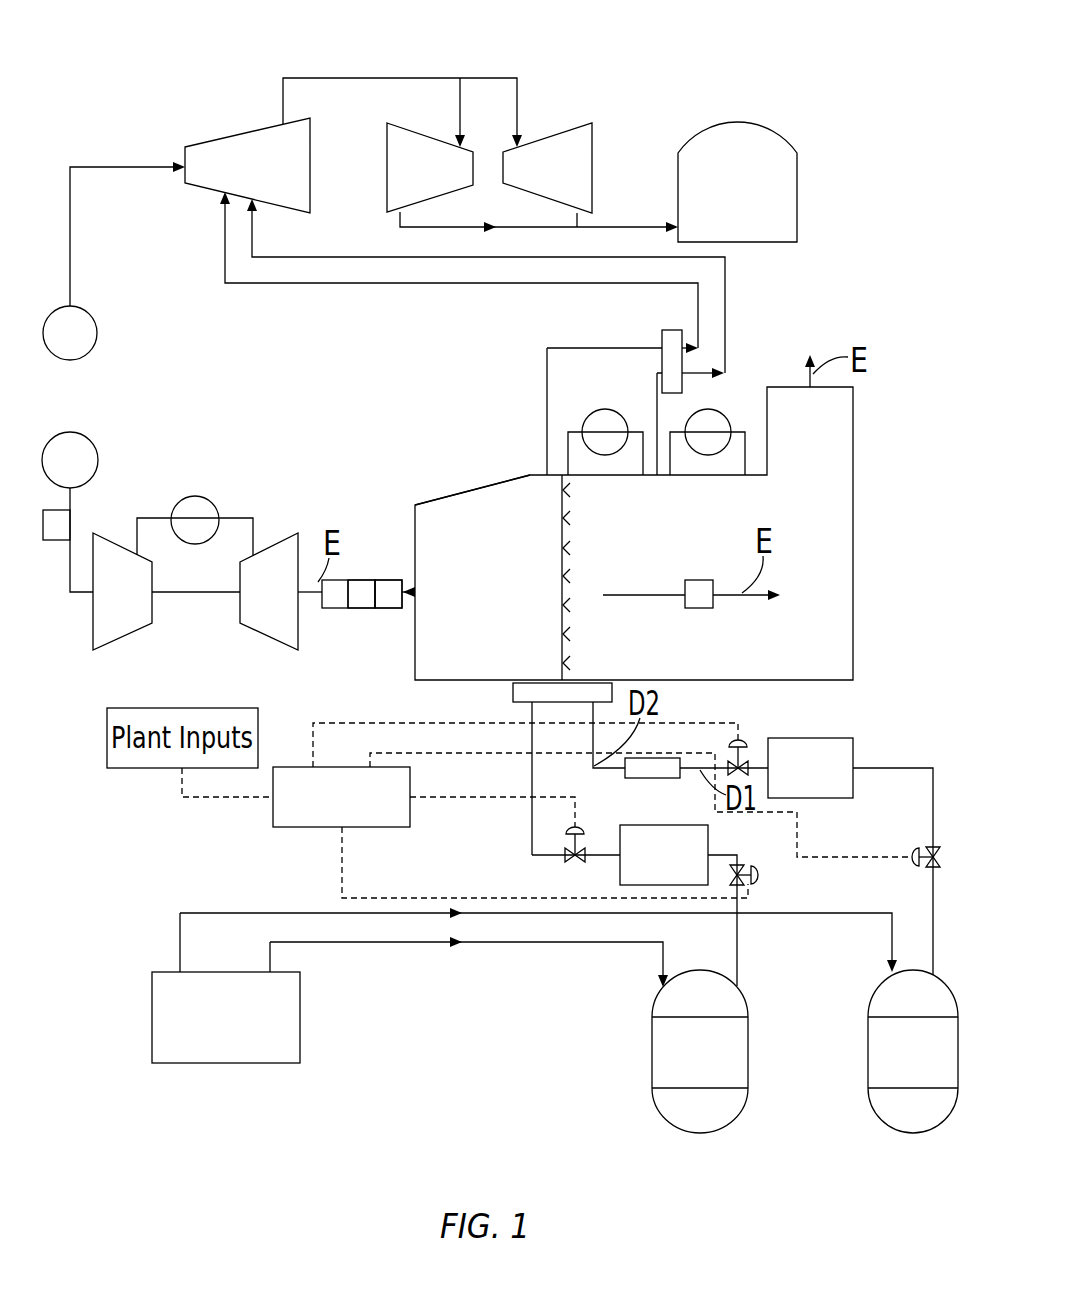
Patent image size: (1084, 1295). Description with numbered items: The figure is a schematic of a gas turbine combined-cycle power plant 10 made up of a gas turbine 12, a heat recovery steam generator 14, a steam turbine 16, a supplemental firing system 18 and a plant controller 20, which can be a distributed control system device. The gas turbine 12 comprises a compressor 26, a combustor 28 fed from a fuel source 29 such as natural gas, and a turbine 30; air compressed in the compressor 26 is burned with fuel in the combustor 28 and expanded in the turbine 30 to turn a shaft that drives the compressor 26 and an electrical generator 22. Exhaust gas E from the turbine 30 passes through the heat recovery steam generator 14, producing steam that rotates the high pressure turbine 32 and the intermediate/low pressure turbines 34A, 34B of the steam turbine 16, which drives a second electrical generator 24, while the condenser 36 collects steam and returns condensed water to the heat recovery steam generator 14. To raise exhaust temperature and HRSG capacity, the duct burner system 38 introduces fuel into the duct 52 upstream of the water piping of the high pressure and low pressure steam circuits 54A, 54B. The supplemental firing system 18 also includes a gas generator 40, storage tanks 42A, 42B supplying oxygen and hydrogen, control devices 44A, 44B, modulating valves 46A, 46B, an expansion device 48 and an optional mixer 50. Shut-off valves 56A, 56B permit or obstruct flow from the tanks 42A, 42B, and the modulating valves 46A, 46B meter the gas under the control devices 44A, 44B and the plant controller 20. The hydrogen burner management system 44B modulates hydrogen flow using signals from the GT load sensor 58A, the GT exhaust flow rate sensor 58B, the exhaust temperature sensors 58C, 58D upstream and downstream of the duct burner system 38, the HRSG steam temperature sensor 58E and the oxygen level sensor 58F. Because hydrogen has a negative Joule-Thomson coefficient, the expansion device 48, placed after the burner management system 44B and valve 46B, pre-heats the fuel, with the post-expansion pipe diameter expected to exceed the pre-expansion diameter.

The combined-cycle power plant 10 is at (862, 26).
The gas turbine 12 is at (194, 565).
The heat recovery steam generator 14 is at (878, 504).
The steam turbine 16 is at (242, 128).
The supplemental firing system 18 is at (876, 708).
The plant controller 20 is at (273, 818).
The electrical generator 22 is at (98, 460).
The electrical generator 24 is at (98, 330).
The compressor 26 is at (125, 636).
The combustor 28 is at (196, 496).
The fuel source 29 is at (372, 405).
The turbine 30 is at (262, 634).
The high pressure turbine 32 is at (200, 187).
The intermediate/low pressure turbine 34A is at (386, 170).
The intermediate/low pressure turbine 34B is at (558, 134).
The condenser 36 is at (700, 133).
The duct burner system 38 is at (560, 603).
The gas generator 40 is at (300, 1018).
The storage tank 42A is at (672, 1124).
The storage tank 42B is at (885, 1123).
The control device 44A is at (619, 862).
The control device 44B is at (856, 757).
The modulating valve 46A is at (568, 830).
The modulating valve 46B is at (739, 740).
The expansion device 48 is at (640, 779).
The mixer 50 is at (513, 692).
The duct 52 is at (519, 477).
The high pressure steam circuit 54A is at (606, 409).
The low pressure steam circuit 54B is at (705, 457).
The shut-off valve 56A is at (760, 879).
The shut-off valve 56B is at (908, 852).
The GT load sensor 58A is at (71, 522).
The GT exhaust flow rate sensor 58B is at (380, 610).
The GT exhaust temperature sensor 58C is at (340, 580).
The GT exhaust temperature sensor 58D is at (697, 610).
The HRSG steam temperature sensor 58E is at (672, 330).
The oxygen level sensor 58F is at (353, 610).